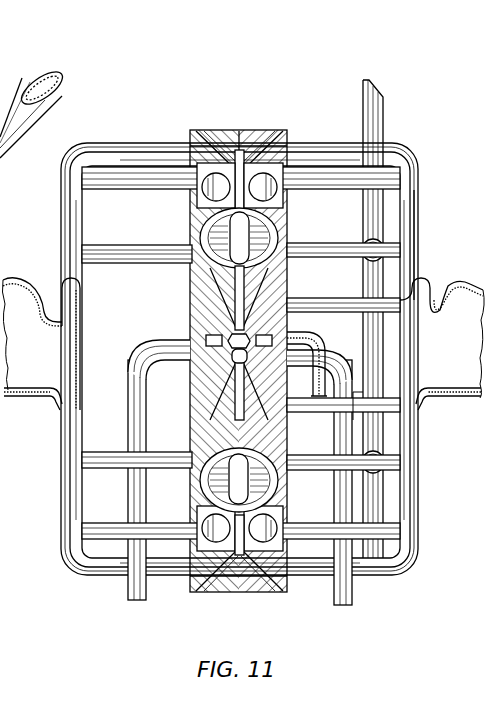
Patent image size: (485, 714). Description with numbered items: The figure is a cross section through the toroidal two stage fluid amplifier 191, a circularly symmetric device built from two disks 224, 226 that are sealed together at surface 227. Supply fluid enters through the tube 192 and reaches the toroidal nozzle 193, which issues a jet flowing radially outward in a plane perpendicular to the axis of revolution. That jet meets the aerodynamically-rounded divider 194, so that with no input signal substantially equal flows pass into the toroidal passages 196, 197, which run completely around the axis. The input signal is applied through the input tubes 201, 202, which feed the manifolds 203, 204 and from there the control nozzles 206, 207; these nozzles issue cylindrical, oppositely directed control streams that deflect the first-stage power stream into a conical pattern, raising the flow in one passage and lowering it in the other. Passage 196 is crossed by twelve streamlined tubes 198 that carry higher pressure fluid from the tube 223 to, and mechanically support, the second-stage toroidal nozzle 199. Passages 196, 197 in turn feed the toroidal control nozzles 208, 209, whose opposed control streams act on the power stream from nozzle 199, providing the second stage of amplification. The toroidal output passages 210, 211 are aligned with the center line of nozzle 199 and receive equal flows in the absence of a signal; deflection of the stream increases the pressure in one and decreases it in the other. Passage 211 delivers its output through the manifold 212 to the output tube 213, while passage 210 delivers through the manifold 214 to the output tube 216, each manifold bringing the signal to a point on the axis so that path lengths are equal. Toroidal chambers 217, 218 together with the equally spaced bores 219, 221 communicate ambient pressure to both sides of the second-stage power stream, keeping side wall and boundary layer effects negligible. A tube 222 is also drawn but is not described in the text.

The toroidal two stage fluid amplifier 191 is at (161, 608).
The tube 192 is at (372, 392).
The toroidal nozzle 193 is at (288, 300).
The aerodynamically-rounded divider 194 is at (202, 300).
The toroidal passage 196 is at (285, 225).
The toroidal passage 197 is at (190, 240).
The aerodynamically streamlined tubes 198 is at (300, 250).
The toroidal nozzle 199 is at (195, 270).
The input tube 201 is at (353, 592).
The input tube 202 is at (128, 596).
The manifold 203 is at (320, 340).
The manifold 204 is at (182, 330).
The control nozzle 206 is at (300, 335).
The control nozzle 207 is at (214, 378).
The toroidal control nozzle 208 is at (292, 214).
The toroidal control nozzle 209 is at (186, 208).
The toroidal output passage 210 is at (262, 150).
The toroidal output passage 211 is at (205, 142).
The manifold 212 is at (62, 478).
The output tube 213 is at (25, 290).
The manifold 214 is at (418, 248).
The output tube 216 is at (442, 300).
The toroidal chamber 217 is at (290, 165).
The toroidal chamber 218 is at (196, 170).
The bores 219 is at (300, 176).
The bores 221 is at (190, 160).
The inlet tube 222 is at (33, 112).
The tube 223 is at (383, 128).
The disk 224 is at (255, 130).
The disk 226 is at (235, 130).
The surface 227 is at (243, 128).